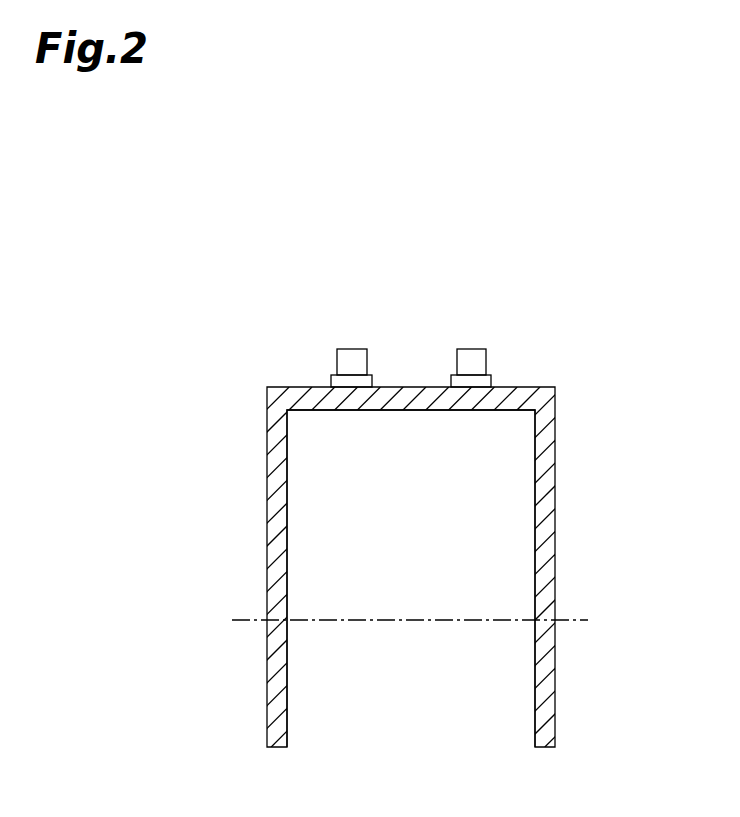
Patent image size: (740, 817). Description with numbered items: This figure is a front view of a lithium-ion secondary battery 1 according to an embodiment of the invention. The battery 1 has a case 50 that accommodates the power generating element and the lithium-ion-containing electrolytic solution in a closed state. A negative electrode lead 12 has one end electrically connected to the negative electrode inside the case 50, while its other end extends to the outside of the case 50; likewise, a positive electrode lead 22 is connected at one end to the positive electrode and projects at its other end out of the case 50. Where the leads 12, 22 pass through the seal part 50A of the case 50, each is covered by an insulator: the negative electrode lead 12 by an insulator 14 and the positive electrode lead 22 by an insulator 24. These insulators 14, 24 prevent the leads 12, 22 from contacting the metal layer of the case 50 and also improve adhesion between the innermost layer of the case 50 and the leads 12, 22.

The lithium-ion secondary battery 1 is at (545, 282).
The negative electrode lead 12 is at (352, 349).
The insulator 14 is at (331, 380).
The positive electrode lead 22 is at (471, 349).
The insulator 24 is at (451, 380).
The case 50 is at (555, 533).
The seal part 50A is at (542, 457).